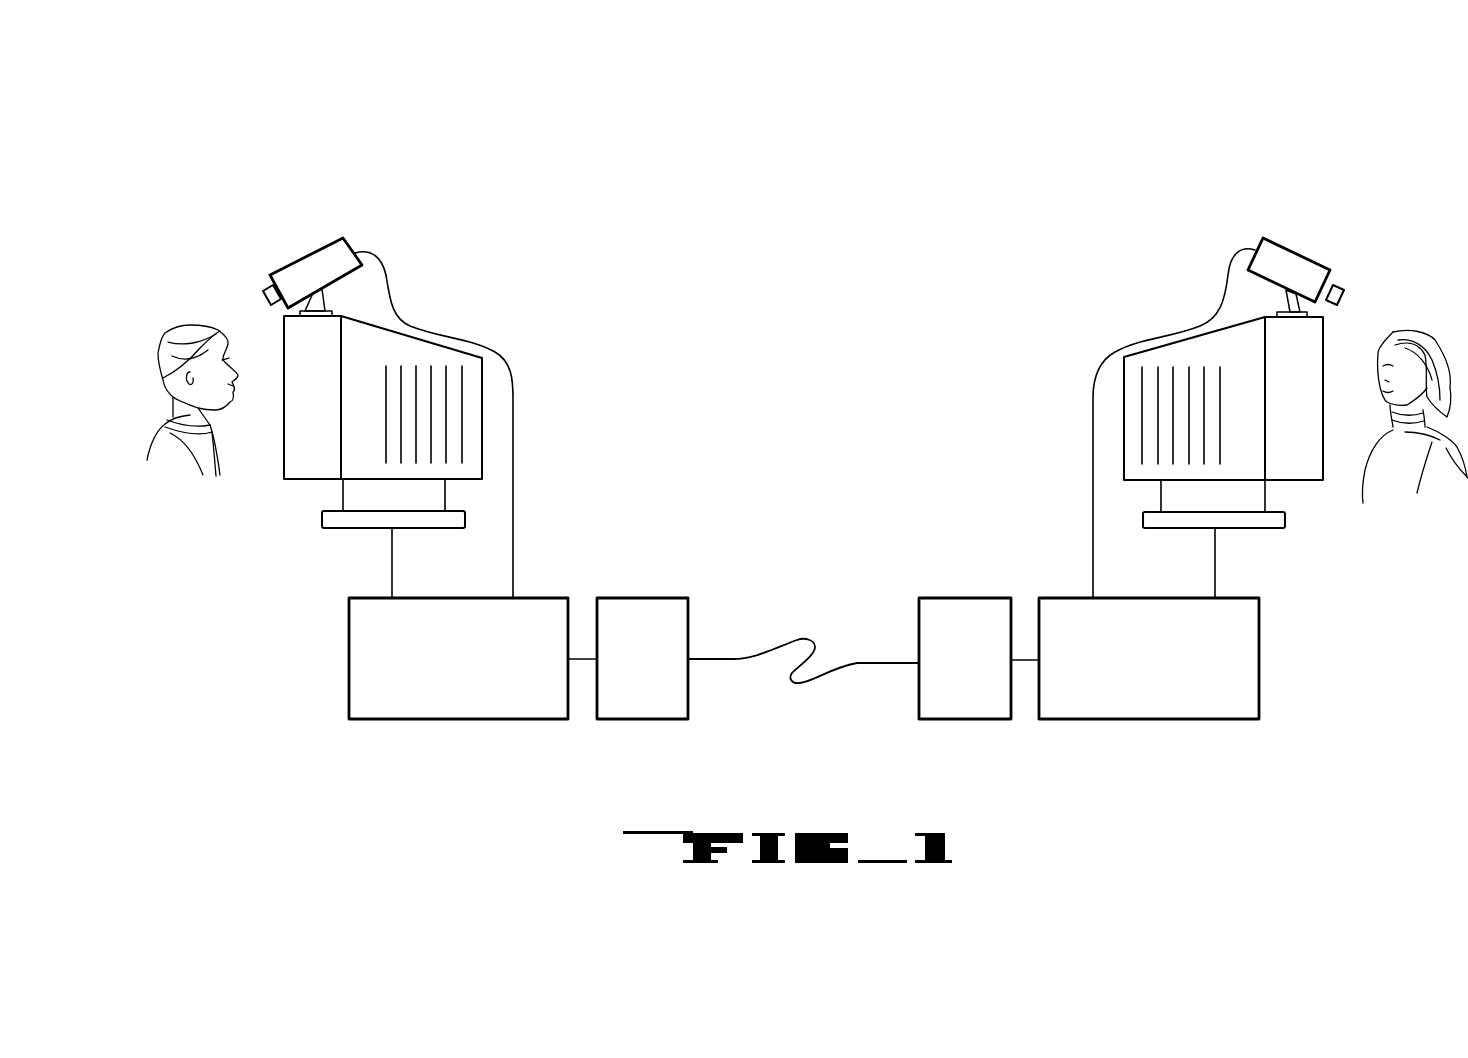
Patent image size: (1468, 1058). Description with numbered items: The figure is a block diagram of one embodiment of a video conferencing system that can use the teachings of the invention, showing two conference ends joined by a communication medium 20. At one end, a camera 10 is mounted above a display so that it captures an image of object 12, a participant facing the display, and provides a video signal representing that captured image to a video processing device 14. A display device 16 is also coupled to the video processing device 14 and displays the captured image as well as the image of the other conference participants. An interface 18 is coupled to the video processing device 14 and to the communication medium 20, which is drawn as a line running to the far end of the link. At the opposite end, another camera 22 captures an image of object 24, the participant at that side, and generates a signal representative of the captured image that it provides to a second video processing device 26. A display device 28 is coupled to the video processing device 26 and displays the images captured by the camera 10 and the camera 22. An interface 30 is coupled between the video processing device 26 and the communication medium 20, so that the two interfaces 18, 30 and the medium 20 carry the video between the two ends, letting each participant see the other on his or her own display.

The camera 10 is at (334, 238).
The object 12 is at (192, 325).
The video processing device 14 is at (349, 645).
The display device 16 is at (283, 453).
The interface 18 is at (643, 598).
The communication medium 20 is at (732, 657).
The camera 22 is at (1278, 237).
The object 24 is at (1417, 333).
The video processing device 26 is at (1259, 637).
The display device 28 is at (1300, 483).
The interface 30 is at (953, 598).